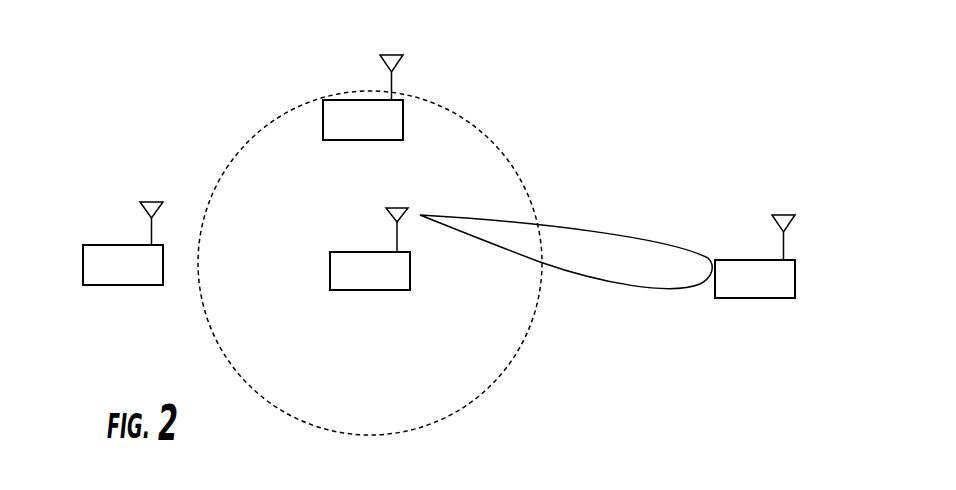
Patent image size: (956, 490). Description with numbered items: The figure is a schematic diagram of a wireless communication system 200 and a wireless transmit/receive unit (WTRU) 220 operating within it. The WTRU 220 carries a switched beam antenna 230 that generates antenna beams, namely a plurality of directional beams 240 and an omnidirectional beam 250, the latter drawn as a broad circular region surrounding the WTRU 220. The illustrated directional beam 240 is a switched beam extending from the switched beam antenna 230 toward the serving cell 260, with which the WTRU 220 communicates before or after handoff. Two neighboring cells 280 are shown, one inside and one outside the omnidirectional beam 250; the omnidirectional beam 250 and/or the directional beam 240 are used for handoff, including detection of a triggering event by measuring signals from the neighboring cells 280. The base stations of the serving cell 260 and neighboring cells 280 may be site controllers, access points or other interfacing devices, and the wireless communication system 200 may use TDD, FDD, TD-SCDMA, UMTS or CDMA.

The wireless communication system 200 is at (567, 50).
The wireless transmit/receive unit (WTRU) 220 is at (330, 268).
The switched beam antenna 230 is at (386, 219).
The directional beam 240 is at (578, 222).
The omnidirectional beam 250 is at (499, 145).
The serving cell 260 is at (796, 276).
The neighboring cell 280 is at (323, 118).